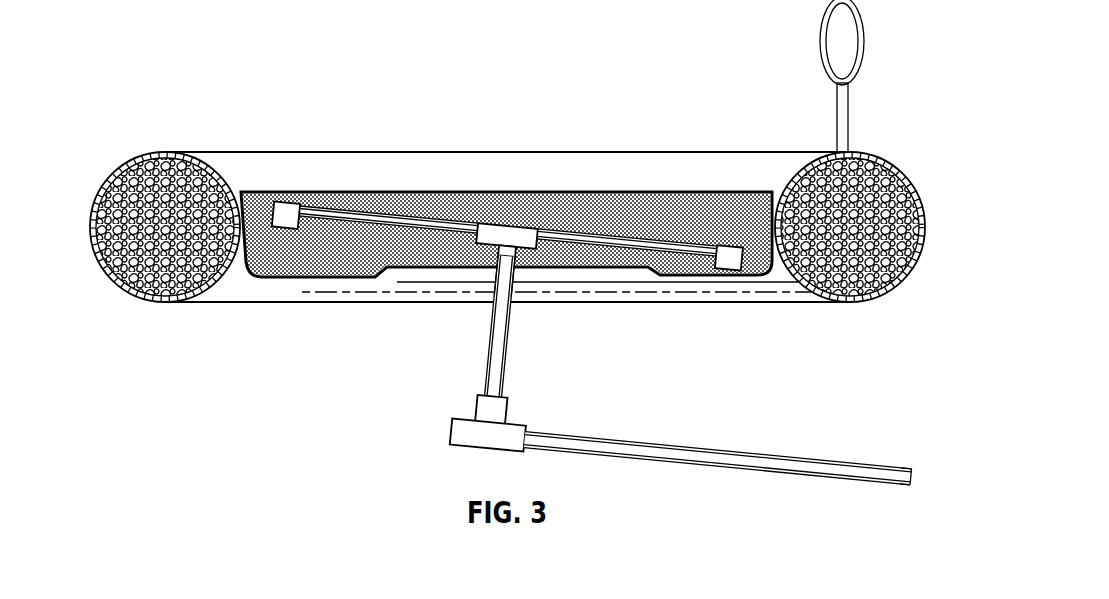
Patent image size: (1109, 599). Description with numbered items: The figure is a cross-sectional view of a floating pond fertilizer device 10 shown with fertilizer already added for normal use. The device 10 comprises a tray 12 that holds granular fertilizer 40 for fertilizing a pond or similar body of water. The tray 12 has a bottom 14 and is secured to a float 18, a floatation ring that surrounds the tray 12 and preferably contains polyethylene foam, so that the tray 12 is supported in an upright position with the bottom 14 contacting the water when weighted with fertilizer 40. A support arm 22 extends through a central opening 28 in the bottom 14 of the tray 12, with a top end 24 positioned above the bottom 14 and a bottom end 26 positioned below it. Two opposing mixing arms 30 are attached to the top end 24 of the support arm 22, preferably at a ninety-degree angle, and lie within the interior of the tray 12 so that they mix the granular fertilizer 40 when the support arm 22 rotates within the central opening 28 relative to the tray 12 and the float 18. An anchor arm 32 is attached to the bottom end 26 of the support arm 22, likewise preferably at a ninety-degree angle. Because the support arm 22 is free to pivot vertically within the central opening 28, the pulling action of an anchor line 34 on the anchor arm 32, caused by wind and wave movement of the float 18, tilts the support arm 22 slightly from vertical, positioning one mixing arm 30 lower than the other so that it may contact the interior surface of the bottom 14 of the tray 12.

The floating pond fertilizer device 10 is at (138, 111).
The tray 12 is at (260, 278).
The bottom 14 is at (347, 300).
The float 18 is at (162, 152).
The support arm 22 is at (496, 338).
The top end 24 is at (503, 210).
The bottom end 26 is at (487, 443).
The central opening 28 is at (524, 284).
The mixing arms 30 is at (342, 208).
The anchor arm 32 is at (757, 468).
The anchor line 34 is at (954, 482).
The granular fertilizer 40 is at (620, 210).